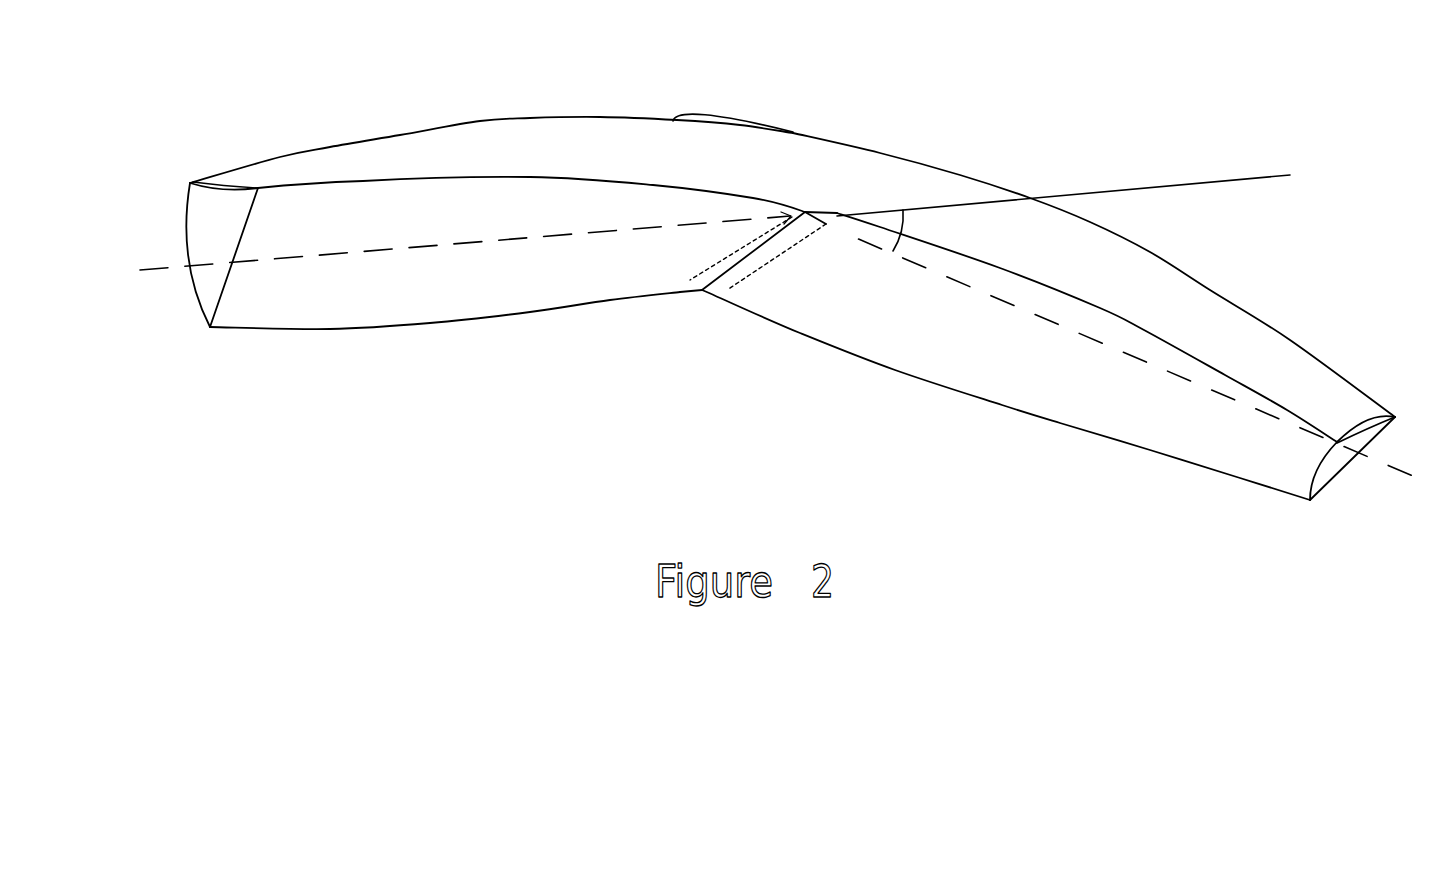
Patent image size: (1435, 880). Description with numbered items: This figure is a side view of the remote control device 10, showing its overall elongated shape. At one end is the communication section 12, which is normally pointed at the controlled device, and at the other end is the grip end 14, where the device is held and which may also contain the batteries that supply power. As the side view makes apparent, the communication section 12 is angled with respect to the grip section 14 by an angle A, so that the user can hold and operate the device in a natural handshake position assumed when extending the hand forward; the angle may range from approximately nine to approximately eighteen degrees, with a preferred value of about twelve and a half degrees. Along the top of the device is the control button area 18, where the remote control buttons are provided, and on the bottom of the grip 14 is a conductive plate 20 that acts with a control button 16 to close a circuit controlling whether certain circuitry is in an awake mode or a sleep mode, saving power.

The remote control device 10 is at (783, 274).
The communication section 12 is at (203, 287).
The grip end 14 is at (1064, 316).
The control button 16 is at (741, 123).
The control button area 18 is at (459, 123).
The conductive plate 20 is at (1002, 405).
The angle A is at (907, 222).